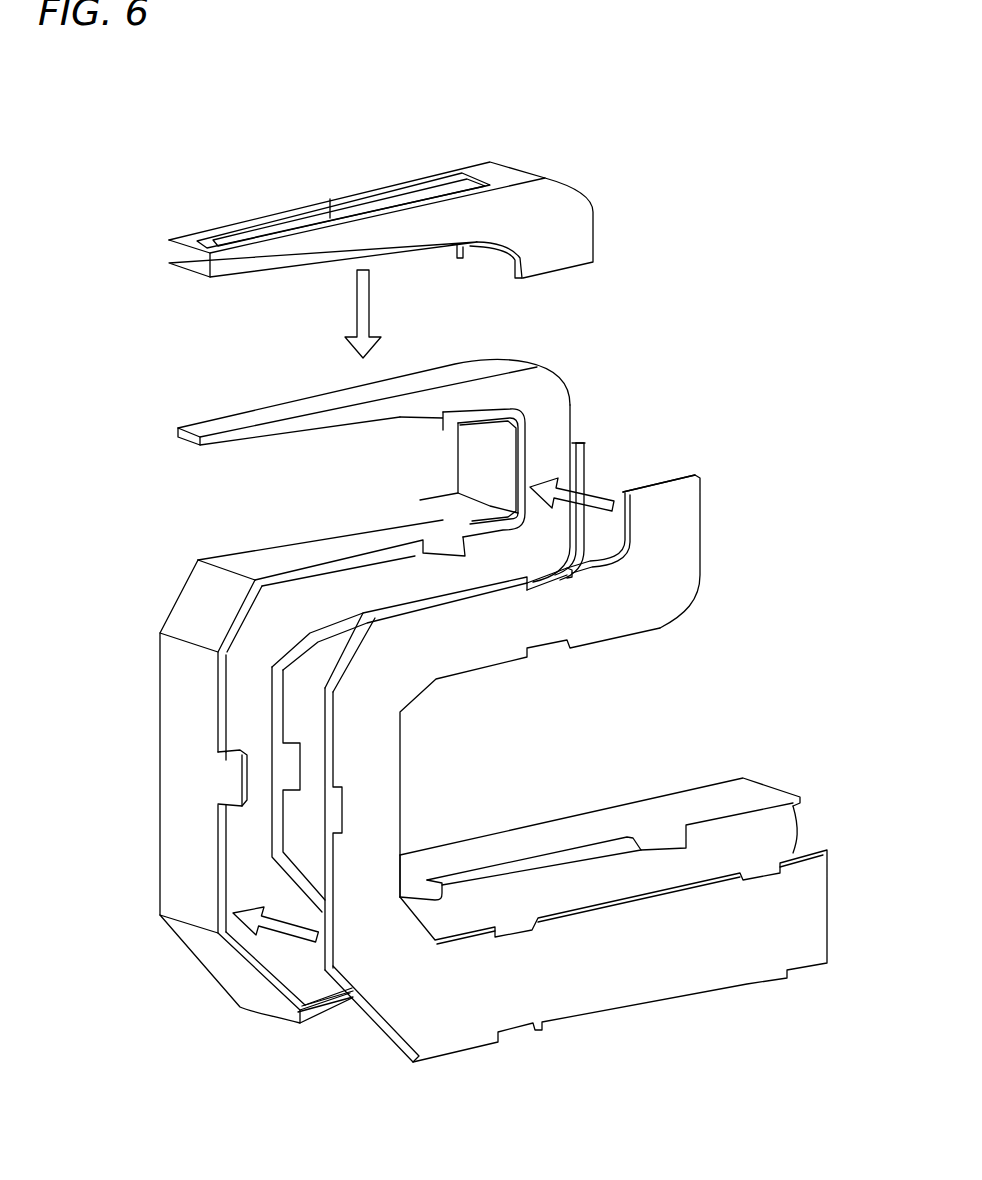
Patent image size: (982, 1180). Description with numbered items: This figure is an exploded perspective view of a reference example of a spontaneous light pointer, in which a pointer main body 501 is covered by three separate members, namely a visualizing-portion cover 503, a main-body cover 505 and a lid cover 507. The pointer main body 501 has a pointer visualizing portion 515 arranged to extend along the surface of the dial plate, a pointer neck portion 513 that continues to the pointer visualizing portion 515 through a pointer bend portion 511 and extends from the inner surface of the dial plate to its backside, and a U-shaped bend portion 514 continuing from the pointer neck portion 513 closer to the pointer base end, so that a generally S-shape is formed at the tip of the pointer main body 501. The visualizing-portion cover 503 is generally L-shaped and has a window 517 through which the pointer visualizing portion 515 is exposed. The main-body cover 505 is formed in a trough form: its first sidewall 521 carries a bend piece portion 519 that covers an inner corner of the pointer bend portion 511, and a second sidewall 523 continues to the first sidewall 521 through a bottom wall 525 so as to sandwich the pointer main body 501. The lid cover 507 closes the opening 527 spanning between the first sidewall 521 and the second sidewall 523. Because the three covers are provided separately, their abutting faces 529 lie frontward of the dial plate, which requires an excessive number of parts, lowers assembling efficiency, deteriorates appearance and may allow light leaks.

The pointer main body 501 is at (240, 867).
The visualizing-portion cover 503 is at (429, 158).
The main-body cover 505 is at (156, 663).
The lid cover 507 is at (708, 548).
The pointer bend portion 511 is at (553, 372).
The pointer neck portion 513 is at (550, 513).
The U-shaped bend portion 514 is at (270, 633).
The pointer visualizing portion 515 is at (325, 402).
The window 517 is at (330, 207).
The bend piece portion 519 is at (457, 458).
The first sidewall 521 is at (342, 543).
The second sidewall 523 is at (575, 827).
The bottom wall 525 is at (303, 993).
The opening 527 is at (230, 694).
The abutting faces 529 is at (483, 260).